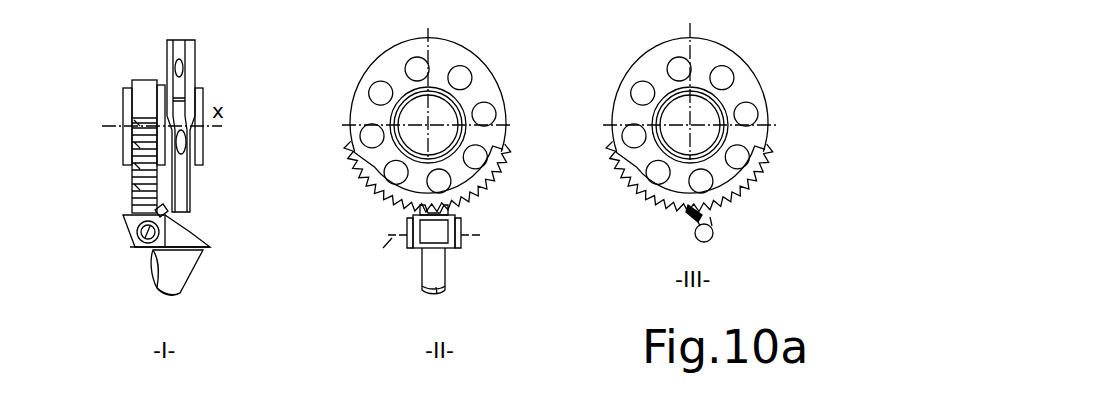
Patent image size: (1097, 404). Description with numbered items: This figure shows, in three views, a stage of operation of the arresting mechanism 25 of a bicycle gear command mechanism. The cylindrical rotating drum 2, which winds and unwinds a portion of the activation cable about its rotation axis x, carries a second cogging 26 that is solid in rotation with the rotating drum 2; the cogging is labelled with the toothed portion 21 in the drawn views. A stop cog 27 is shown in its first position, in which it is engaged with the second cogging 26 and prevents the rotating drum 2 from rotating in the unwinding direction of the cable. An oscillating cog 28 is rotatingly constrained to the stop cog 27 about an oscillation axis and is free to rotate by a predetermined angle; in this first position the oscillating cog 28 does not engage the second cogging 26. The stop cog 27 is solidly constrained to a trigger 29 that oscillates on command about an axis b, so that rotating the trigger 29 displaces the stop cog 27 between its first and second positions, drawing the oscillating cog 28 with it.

The rotating drum 2 is at (187, 50).
The ratchet teeth 21 is at (353, 147).
The arresting mechanism 25 is at (114, 246).
The second cogging 26 is at (135, 192).
The stop cog 27 is at (460, 222).
The oscillating cog 28 is at (168, 204).
The trigger 29 is at (187, 247).